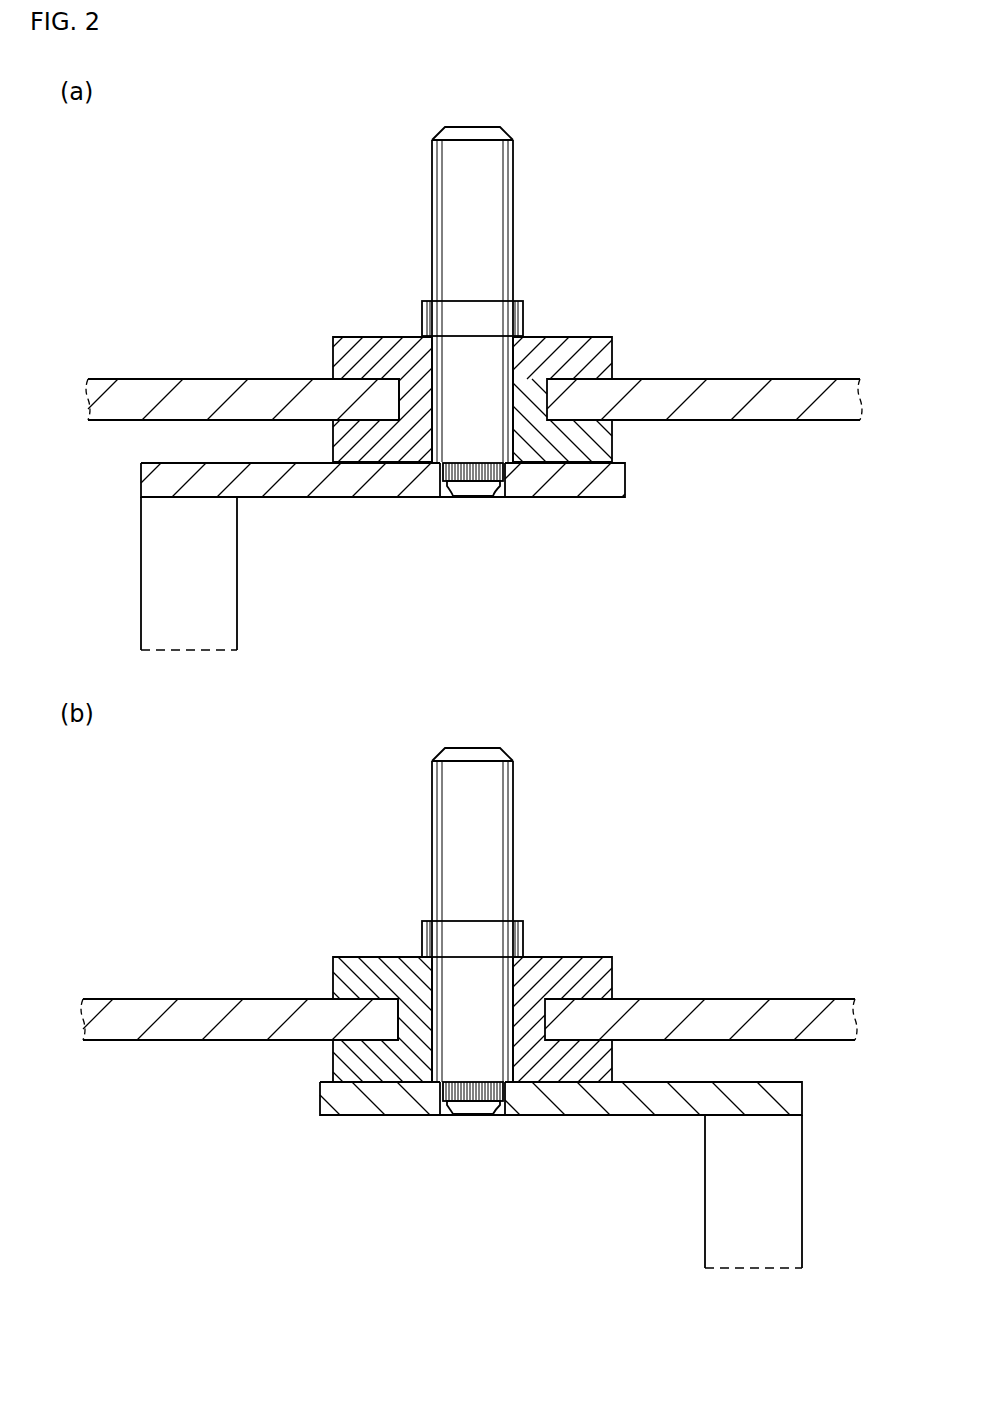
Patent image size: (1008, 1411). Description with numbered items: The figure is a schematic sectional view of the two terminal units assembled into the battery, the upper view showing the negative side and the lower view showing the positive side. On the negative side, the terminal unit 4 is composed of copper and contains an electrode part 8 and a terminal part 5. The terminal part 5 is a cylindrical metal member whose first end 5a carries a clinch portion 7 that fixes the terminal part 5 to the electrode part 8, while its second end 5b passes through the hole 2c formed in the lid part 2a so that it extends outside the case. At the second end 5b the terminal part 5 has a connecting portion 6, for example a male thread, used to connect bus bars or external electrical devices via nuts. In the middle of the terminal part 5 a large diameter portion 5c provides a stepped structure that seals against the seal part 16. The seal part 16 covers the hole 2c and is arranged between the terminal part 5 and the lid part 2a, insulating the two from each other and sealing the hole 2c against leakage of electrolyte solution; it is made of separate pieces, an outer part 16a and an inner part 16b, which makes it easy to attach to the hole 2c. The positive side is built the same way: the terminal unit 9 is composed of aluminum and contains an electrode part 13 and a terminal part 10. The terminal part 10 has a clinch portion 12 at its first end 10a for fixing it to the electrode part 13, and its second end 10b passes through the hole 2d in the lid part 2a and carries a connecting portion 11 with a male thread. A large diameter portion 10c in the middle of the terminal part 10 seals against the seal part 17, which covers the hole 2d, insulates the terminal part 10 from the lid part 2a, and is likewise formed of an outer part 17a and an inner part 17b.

The lid part 2a is at (243, 378).
The hole 2c is at (402, 402).
The hole 2d is at (545, 1020).
The terminal unit 4 is at (587, 530).
The terminal part 5 is at (548, 215).
The first end 5a is at (435, 487).
The second end 5b is at (521, 140).
The large diameter portion 5c is at (417, 317).
The connecting portion 6 is at (417, 183).
The clinch portion 7 is at (414, 479).
The electrode part 8 is at (638, 478).
The terminal unit 9 is at (358, 1150).
The terminal part 10 is at (395, 835).
The first end 10a is at (508, 1107).
The second end 10b is at (427, 762).
The large diameter portion 10c is at (527, 937).
The connecting portion 11 is at (527, 807).
The clinch portion 12 is at (527, 1097).
The electrode part 13 is at (307, 1100).
The seal part 16 is at (622, 332).
The outer part 16a is at (562, 334).
The inner part 16b is at (613, 437).
The seal part 17 is at (325, 950).
The outer part 17a is at (385, 957).
The inner part 17b is at (332, 1058).